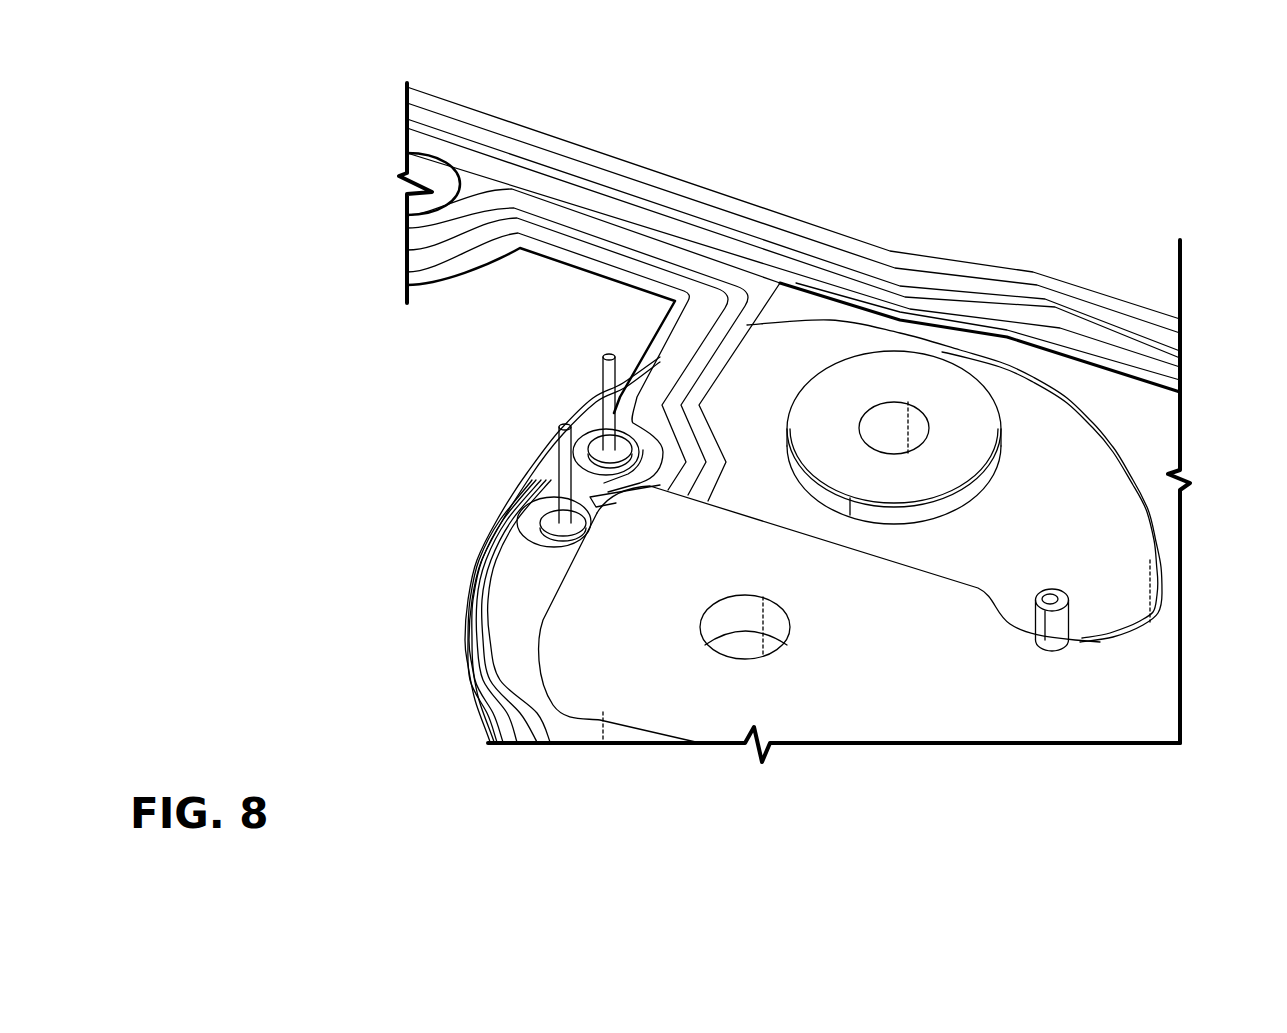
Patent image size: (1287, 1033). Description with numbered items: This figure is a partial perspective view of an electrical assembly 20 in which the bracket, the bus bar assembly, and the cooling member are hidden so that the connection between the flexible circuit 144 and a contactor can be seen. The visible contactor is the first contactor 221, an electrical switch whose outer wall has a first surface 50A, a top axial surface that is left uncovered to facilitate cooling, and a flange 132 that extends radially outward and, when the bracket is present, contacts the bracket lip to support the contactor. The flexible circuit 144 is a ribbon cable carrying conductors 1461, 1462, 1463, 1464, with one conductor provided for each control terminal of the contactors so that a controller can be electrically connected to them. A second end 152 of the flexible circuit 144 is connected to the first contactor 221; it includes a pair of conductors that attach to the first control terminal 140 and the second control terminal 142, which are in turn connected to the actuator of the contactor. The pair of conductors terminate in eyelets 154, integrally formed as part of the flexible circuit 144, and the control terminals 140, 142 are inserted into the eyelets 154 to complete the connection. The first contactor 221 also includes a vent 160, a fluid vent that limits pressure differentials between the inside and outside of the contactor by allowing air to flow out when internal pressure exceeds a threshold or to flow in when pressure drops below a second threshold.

The electrical assembly 20 is at (1072, 208).
The flexible circuit 144 is at (604, 151).
The conductor 1461 is at (673, 350).
The conductor 1462 is at (735, 300).
The conductor 1463 is at (797, 262).
The conductor 1464 is at (870, 262).
The first control terminal 140 is at (603, 365).
The eyelet 154 is at (590, 435).
The second control terminal 142 is at (557, 462).
The first contactor 221 is at (437, 592).
The second end 152 is at (537, 551).
The first surface 50A is at (523, 622).
The flange 132 is at (492, 703).
The vent 160 is at (1076, 618).